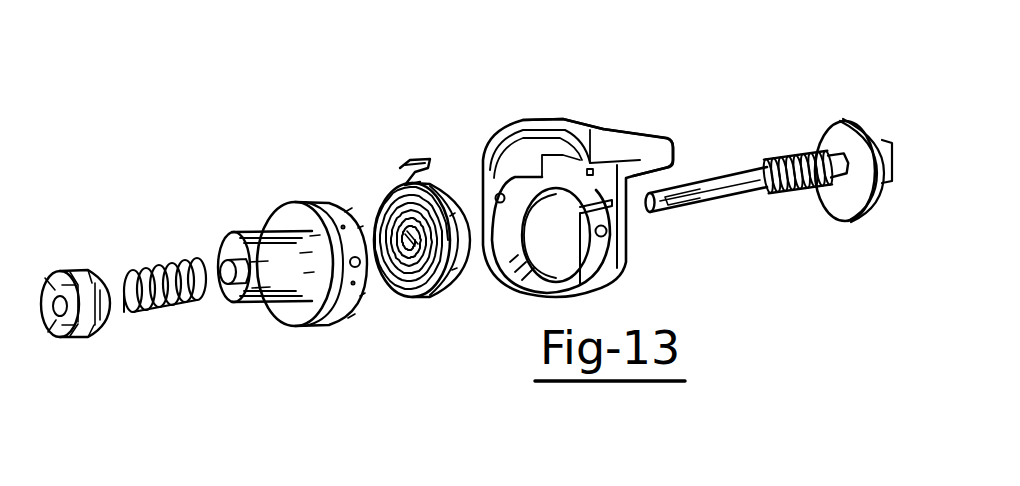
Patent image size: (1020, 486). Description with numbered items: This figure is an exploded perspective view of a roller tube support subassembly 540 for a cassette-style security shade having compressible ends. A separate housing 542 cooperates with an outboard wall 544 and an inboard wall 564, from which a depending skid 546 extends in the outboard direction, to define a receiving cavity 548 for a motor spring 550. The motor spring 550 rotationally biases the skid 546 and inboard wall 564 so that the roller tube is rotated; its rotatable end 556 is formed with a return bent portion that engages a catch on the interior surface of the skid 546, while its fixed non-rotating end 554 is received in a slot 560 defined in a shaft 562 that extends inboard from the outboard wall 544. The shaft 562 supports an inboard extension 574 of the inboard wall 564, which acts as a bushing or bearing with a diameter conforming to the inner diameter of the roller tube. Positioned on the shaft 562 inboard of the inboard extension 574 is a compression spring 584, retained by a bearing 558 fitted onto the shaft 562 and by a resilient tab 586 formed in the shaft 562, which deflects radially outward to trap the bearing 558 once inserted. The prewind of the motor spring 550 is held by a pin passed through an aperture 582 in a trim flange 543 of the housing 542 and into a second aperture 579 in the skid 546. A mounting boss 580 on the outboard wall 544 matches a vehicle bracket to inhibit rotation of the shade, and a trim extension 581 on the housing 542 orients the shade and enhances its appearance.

The roller tube support subassembly 540 is at (718, 28).
The housing 542 is at (605, 292).
The trim flange 543 is at (567, 133).
The outboard wall 544 is at (847, 190).
The skid 546 is at (347, 301).
The receiving cavity 548 is at (507, 283).
The motor spring 550 is at (463, 283).
The fixed non-rotating end 554 is at (393, 287).
The rotatable end 556 is at (420, 165).
The bearing 558 is at (95, 322).
The slot 560 is at (825, 137).
The shaft 562 is at (747, 200).
The inboard wall 564 is at (307, 305).
The inboard extension 574 is at (250, 307).
The second aperture 579 is at (355, 256).
The mounting boss 580 is at (882, 136).
The trim extension 581 is at (650, 133).
The aperture 582 is at (606, 237).
The compression spring 584 is at (167, 311).
The resilient tab 586 is at (677, 208).